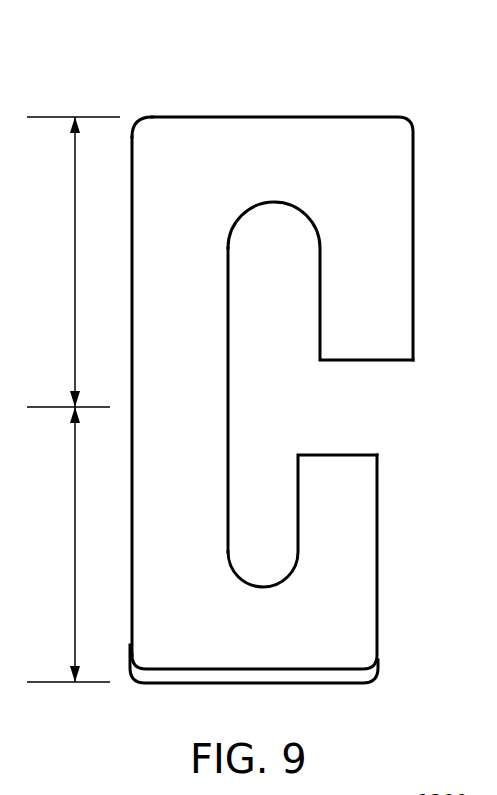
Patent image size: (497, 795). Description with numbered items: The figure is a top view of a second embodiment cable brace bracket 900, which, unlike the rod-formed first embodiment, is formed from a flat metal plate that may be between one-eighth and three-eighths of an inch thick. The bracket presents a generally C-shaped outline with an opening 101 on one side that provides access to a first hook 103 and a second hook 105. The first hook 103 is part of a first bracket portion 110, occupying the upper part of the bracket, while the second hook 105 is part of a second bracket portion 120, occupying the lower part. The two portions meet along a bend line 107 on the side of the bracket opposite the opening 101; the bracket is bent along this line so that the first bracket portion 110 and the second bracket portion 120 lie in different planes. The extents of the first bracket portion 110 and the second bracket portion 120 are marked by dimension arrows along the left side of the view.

The second embodiment cable brace bracket 900 is at (155, 56).
The opening 101 is at (430, 418).
The first hook 103 is at (268, 366).
The second hook 105 is at (269, 455).
The bend line 107 is at (128, 407).
The first bracket portion 110 is at (74, 256).
The second bracket portion 120 is at (74, 558).